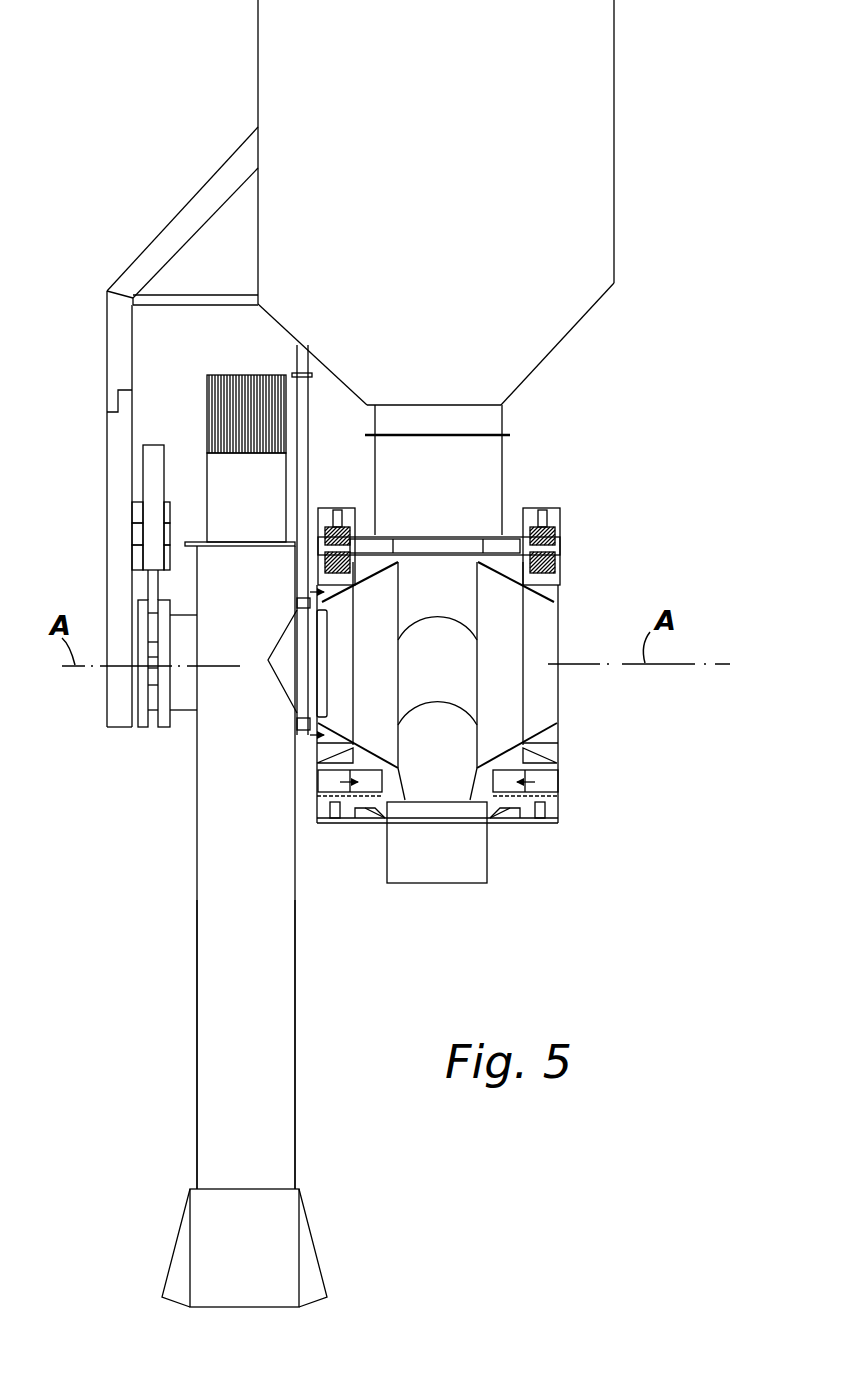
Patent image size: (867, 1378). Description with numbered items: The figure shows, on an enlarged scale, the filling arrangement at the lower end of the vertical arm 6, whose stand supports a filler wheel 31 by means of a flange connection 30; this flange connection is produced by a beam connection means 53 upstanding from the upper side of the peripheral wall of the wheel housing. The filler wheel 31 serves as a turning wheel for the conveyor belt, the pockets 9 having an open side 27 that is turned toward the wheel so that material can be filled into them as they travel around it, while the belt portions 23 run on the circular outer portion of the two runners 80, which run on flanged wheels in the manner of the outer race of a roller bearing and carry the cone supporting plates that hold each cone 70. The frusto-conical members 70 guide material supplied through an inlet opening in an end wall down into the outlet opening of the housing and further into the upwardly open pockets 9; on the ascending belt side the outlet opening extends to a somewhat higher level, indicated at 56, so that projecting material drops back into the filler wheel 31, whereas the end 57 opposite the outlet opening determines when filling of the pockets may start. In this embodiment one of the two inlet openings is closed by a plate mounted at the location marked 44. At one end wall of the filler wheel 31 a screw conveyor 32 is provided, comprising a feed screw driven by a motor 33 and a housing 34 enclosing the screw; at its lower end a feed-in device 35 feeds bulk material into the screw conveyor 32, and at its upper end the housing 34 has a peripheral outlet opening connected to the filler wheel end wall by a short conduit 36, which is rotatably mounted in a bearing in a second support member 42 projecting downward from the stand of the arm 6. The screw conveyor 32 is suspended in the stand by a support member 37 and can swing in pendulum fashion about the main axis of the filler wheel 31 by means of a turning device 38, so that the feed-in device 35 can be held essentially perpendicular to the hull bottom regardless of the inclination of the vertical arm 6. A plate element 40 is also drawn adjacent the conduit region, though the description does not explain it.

The vertical arm 6 is at (600, 103).
The flange connection 30 is at (505, 402).
The beam connection means 53 is at (520, 472).
The runner 80 is at (328, 500).
The support member 37 is at (115, 360).
The turning device 38 is at (143, 473).
The motor 33 is at (245, 376).
The second support member 42 is at (303, 408).
The screw conveyor 32 is at (190, 912).
The housing 34 is at (296, 1092).
The feed-in device 35 is at (310, 1240).
The conduit 36 is at (290, 640).
The plate 40 is at (333, 718).
The filler wheel 31 is at (593, 633).
The plate mounting location 44 is at (560, 625).
The cone 70 is at (362, 583).
The higher level of outlet opening 56 is at (432, 615).
The end opposite to outlet opening 57 is at (437, 700).
The open side 27 is at (428, 803).
The belt portions 23 is at (330, 830).
The pocket 9 is at (447, 880).